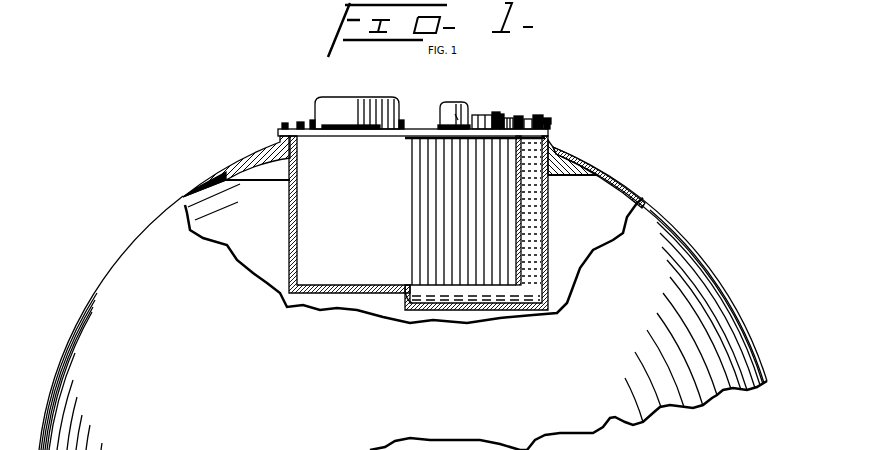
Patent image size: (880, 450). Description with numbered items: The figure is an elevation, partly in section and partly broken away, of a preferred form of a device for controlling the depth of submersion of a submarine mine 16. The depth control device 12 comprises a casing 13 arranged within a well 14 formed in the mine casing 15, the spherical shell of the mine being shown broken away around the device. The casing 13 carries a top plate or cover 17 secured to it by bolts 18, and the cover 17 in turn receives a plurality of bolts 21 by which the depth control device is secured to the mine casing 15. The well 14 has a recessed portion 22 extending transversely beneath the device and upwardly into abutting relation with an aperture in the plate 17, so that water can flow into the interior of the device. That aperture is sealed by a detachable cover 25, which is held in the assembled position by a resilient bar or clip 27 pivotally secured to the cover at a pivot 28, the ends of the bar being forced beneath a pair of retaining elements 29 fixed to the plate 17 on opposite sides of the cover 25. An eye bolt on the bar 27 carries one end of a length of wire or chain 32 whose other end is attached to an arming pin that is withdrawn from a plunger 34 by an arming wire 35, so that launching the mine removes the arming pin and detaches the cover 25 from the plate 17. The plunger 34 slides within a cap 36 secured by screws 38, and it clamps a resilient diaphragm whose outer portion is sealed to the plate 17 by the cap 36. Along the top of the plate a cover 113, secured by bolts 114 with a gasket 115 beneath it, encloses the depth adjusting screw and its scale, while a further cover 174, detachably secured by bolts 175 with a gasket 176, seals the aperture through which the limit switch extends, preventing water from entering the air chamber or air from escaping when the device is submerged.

The depth control device 12 is at (405, 214).
The casing 13 is at (524, 229).
The well 14 is at (408, 292).
The mine casing 15 is at (238, 160).
The submarine mine 16 is at (97, 290).
The top plate or cover 17 is at (284, 131).
The bolts 18 is at (300, 122).
The bolts 21 is at (286, 125).
The recessed portion 22 is at (531, 268).
The detachable cover 25 is at (560, 142).
The resilient bar or clip 27 is at (540, 128).
The pivot 28 is at (535, 124).
The retaining elements 29 is at (548, 130).
The wire or chain 32 is at (522, 120).
The plunger 34 is at (481, 114).
The arming wire 35 is at (480, 113).
The cap 36 is at (510, 118).
The screws 38 is at (500, 113).
The cover 113 is at (447, 100).
The bolts 114 is at (455, 114).
The gasket 115 is at (442, 127).
The cover 174 is at (353, 97).
The bolts 175 is at (313, 119).
The gasket 176 is at (332, 131).